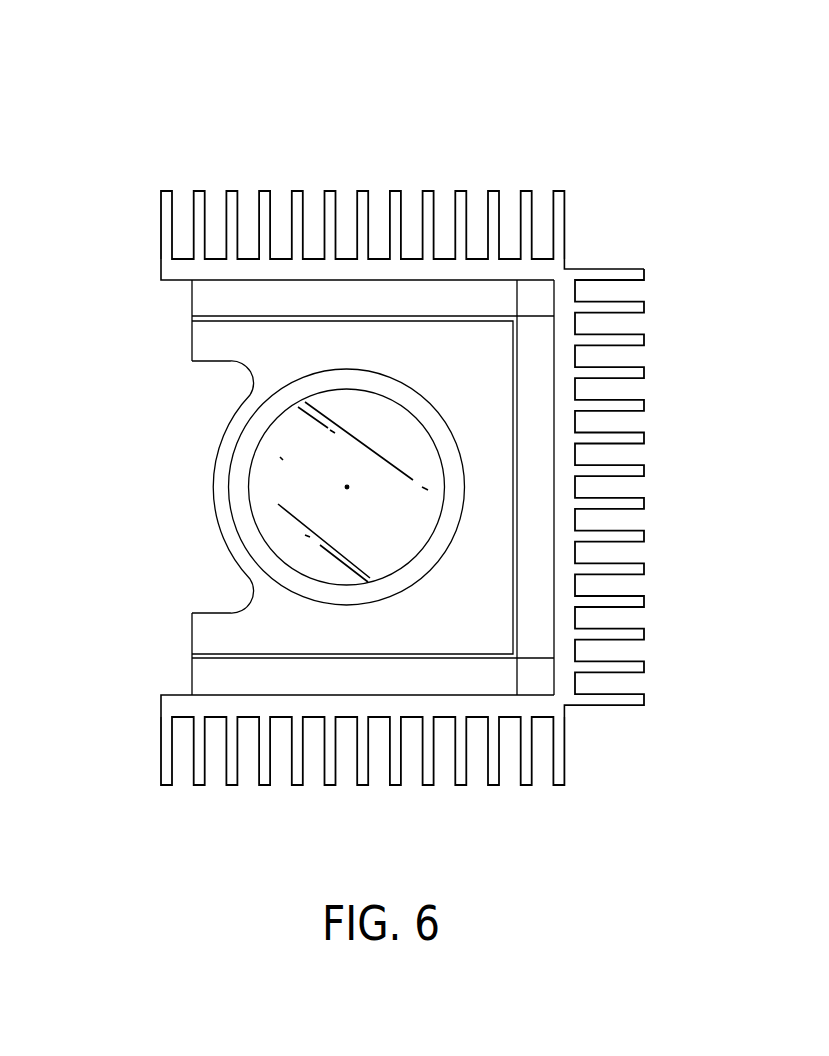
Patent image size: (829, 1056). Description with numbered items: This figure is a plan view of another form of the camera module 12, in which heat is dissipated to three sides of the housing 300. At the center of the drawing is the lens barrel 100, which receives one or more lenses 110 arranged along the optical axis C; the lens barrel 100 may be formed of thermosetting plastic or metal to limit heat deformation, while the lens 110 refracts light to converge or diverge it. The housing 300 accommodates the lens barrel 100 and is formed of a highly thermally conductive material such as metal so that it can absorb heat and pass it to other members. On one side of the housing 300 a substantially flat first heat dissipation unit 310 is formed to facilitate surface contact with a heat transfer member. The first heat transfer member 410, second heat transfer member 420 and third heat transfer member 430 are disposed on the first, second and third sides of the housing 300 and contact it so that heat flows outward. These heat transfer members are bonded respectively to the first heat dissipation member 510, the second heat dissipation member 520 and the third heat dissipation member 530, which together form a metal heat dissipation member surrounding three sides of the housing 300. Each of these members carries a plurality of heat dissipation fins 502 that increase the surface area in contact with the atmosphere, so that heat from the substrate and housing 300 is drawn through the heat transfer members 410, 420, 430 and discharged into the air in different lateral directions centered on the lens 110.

The camera module 12 is at (470, 147).
The heat dissipation fins 502 is at (235, 195).
The second heat dissipation member 520 is at (160, 267).
The third heat dissipation member 530 is at (167, 757).
The first heat dissipation member 510 is at (537, 532).
The first heat transfer member 410 is at (537, 593).
The second heat transfer member 420 is at (210, 302).
The third heat transfer member 430 is at (203, 680).
The first heat dissipation unit 310 is at (261, 320).
The housing 300 is at (227, 532).
The lens barrel 100 is at (253, 430).
The lens 110 is at (280, 458).
The optical axis C is at (347, 487).